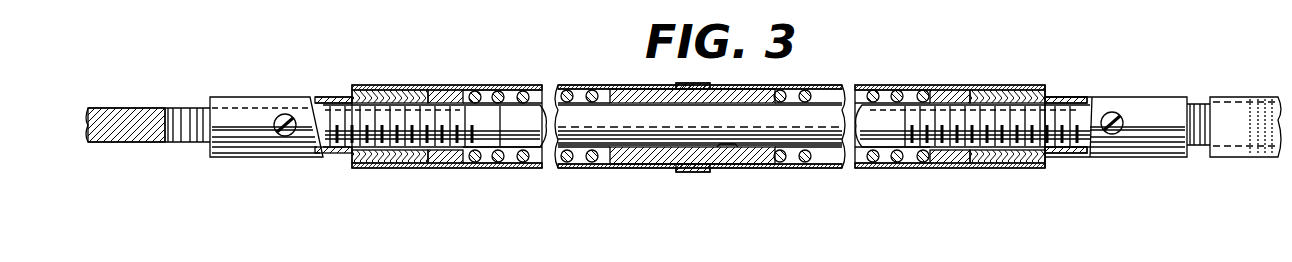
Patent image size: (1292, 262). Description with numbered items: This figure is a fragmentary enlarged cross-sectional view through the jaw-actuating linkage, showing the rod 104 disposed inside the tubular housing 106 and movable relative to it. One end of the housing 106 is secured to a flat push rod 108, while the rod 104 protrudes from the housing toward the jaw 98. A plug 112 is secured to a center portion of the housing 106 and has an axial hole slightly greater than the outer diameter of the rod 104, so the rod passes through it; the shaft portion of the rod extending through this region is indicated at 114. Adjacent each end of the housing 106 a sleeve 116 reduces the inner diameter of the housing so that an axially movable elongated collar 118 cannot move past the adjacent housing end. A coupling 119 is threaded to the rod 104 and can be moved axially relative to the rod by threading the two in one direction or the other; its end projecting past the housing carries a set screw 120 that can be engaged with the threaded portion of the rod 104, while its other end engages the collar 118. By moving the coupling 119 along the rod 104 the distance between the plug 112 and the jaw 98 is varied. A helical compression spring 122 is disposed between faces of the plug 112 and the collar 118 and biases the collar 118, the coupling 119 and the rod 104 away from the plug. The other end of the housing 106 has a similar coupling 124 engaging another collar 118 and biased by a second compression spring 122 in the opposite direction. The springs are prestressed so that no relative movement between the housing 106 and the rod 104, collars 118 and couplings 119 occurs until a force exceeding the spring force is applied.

The jaw 98 is at (1225, 158).
The rod 104 is at (870, 117).
The tubular housing 106 is at (433, 85).
The flat push rod 108 is at (150, 108).
The plug 112 is at (643, 168).
The shaft 114 is at (732, 147).
The sleeve 116 is at (382, 168).
The collar 118 is at (458, 90).
The coupling 119 is at (1073, 102).
The set screw 120 is at (1112, 133).
The helical compression spring 122 is at (595, 87).
The coupling 124 is at (325, 158).